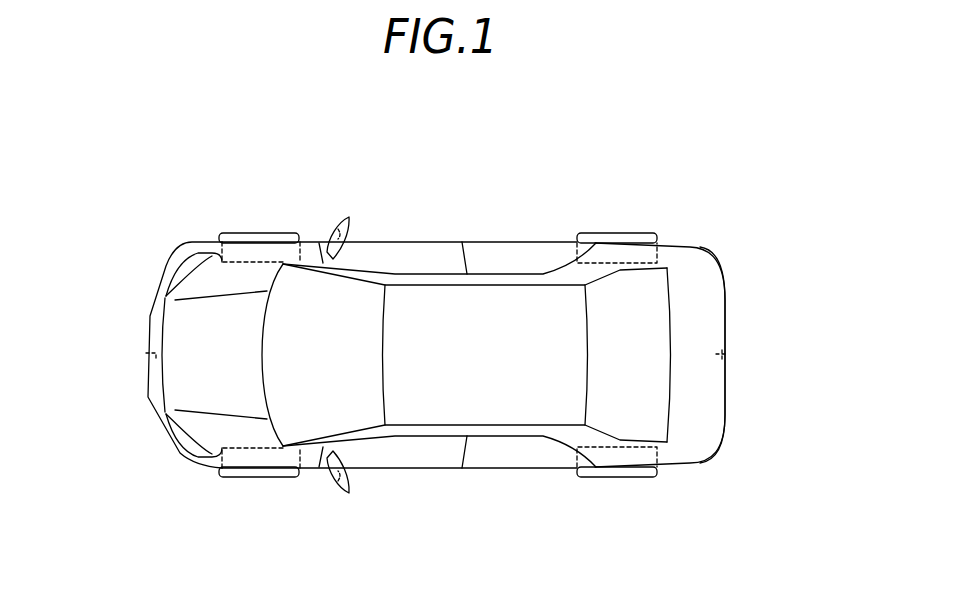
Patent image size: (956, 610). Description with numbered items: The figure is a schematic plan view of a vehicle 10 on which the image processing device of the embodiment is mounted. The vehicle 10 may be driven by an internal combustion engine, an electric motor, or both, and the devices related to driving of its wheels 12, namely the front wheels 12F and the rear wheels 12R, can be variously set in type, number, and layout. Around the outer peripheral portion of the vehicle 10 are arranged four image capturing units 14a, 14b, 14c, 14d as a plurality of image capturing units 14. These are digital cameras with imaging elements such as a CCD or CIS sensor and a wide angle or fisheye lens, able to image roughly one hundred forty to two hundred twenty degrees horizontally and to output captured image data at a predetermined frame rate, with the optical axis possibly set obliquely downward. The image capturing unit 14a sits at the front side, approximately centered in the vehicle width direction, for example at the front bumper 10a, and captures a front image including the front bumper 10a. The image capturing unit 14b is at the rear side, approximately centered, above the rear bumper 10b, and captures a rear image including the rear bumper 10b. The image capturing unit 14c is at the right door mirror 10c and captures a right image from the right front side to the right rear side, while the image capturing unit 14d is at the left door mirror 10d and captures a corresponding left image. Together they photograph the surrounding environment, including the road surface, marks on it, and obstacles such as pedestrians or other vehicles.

The vehicle 10 is at (461, 192).
The front bumper 10a is at (148, 322).
The rear bumper 10b is at (727, 320).
The right door mirror 10c is at (348, 232).
The left door mirror 10d is at (348, 478).
The wheels 12 is at (449, 358).
The front wheels 12F is at (247, 232).
The rear wheels 12R is at (627, 232).
The image capturing units 14 is at (456, 358).
The image capturing unit 14a is at (148, 357).
The image capturing unit 14b is at (727, 357).
The image capturing unit 14c is at (345, 216).
The image capturing unit 14d is at (345, 494).